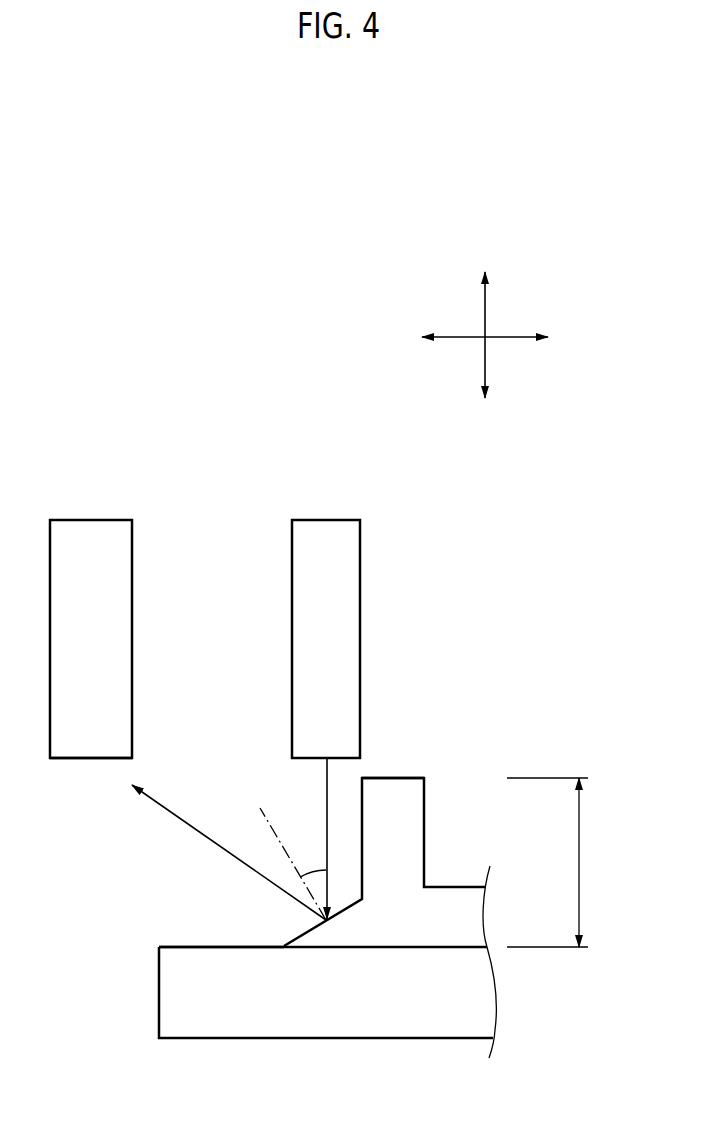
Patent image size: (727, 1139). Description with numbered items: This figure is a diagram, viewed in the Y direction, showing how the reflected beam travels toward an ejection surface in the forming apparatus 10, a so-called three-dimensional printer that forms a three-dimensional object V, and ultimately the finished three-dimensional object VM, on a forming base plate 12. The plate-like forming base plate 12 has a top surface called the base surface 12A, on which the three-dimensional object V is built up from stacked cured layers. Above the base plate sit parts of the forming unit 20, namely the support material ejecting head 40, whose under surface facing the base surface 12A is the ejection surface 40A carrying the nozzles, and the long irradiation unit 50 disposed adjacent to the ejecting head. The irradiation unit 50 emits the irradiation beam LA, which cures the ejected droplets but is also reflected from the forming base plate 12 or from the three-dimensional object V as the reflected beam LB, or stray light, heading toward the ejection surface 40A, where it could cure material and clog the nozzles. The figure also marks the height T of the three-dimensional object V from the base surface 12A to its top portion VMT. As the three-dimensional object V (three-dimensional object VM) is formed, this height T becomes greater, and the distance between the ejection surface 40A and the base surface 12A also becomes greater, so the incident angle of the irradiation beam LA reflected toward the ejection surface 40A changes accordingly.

The forming apparatus 10 is at (486, 502).
The forming base plate 12 is at (395, 1027).
The base surface 12A is at (243, 947).
The forming unit 20 is at (287, 465).
The support material ejecting head 40 is at (90, 520).
The ejection surface 40A is at (95, 762).
The irradiation unit 50 is at (325, 520).
The irradiation beam LA is at (325, 812).
The reflected beam LB is at (202, 838).
The three-dimensional object V is at (447, 810).
The three-dimensional object VM is at (413, 843).
The top portion VMT is at (397, 778).
The height T is at (554, 862).